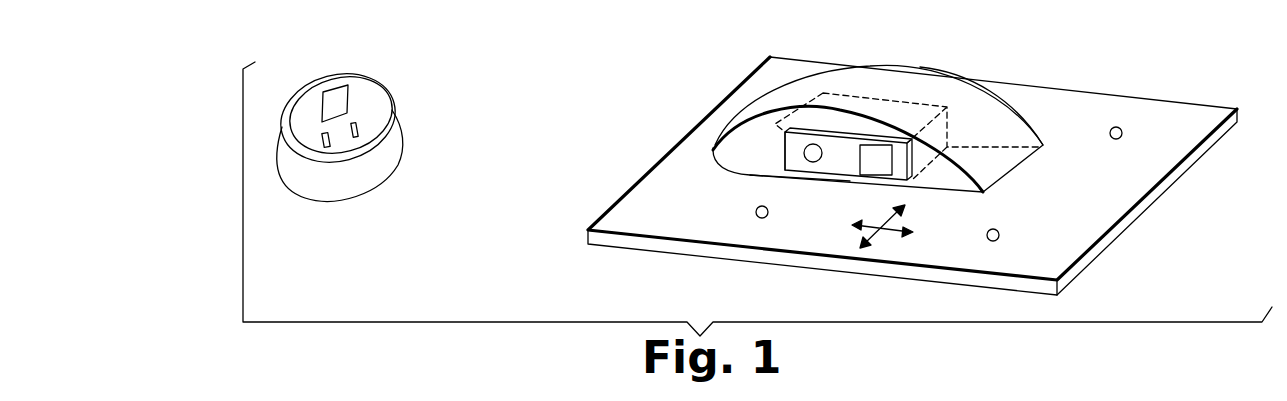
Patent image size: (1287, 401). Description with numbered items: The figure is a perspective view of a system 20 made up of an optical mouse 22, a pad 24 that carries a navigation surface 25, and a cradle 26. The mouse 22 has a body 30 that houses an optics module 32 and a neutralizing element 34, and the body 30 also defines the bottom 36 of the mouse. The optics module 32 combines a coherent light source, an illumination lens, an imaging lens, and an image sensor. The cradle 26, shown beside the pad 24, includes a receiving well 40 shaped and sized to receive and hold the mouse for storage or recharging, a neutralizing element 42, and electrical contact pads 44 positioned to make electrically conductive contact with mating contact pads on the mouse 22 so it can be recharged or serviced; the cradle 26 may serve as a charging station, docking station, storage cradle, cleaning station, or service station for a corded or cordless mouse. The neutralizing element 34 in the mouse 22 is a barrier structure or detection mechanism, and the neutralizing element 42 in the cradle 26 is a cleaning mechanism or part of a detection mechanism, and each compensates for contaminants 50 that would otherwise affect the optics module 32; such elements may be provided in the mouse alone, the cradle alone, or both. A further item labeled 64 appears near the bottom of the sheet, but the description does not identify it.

The system 20 is at (857, 45).
The optical mouse 22 is at (906, 85).
The pad 24 is at (1062, 107).
The navigation surface 25 is at (1103, 205).
The cradle 26 is at (403, 120).
The body 30 is at (972, 105).
The optics module 32 is at (787, 148).
The neutralizing element 34 is at (868, 182).
The bottom 36 is at (752, 182).
The receiving well 40 is at (369, 121).
The neutralizing element 42 is at (333, 83).
The electrical contact pads 44 is at (320, 137).
The contaminants 50 is at (1122, 130).
The cable 64 is at (848, 400).